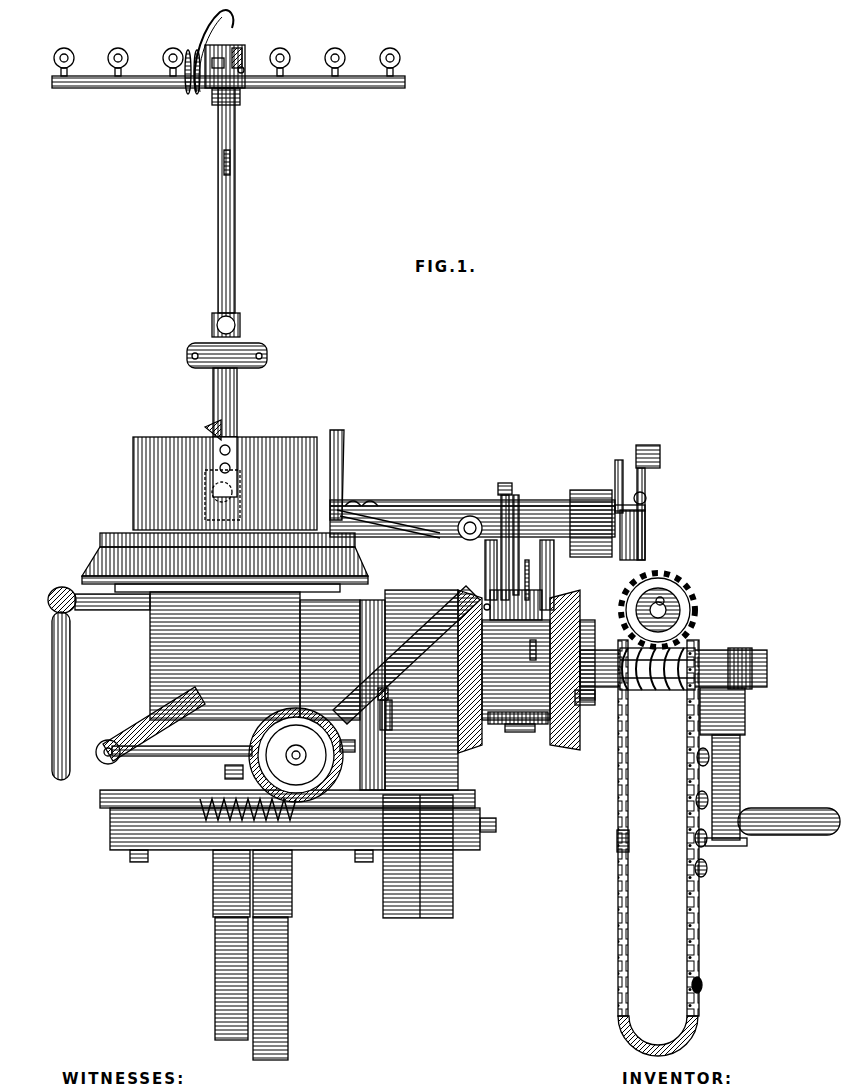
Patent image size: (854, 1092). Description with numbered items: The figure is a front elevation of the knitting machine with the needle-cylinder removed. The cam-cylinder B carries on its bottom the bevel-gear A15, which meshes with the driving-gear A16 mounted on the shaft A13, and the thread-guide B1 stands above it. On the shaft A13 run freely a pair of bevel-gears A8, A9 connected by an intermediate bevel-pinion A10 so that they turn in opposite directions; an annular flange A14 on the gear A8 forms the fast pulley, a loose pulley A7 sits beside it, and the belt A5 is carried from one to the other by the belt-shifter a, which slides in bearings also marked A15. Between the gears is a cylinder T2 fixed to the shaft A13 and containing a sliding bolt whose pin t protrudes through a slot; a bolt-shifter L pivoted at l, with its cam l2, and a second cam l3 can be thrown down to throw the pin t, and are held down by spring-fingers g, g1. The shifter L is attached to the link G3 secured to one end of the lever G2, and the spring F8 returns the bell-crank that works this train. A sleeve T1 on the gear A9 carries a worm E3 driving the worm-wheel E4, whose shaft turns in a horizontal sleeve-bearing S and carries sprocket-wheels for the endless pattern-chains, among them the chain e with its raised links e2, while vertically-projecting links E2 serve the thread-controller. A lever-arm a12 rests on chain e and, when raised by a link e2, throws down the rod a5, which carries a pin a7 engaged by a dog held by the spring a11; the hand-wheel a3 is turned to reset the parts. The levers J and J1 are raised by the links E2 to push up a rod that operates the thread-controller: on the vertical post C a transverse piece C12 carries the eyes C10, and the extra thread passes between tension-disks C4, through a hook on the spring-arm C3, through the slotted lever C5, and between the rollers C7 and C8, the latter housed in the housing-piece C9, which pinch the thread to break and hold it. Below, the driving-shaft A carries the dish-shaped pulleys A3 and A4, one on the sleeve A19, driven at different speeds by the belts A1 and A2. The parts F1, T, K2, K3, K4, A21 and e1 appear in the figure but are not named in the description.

The transverse piece C12 is at (295, 86).
The eyes C10 is at (165, 52).
The lever C5 is at (232, 46).
The roller C7 is at (218, 57).
The housing-piece C9 is at (243, 52).
The roller C8 is at (244, 70).
The tension-disks C4 is at (192, 94).
The spring-arm C3 is at (204, 40).
The vertical post C is at (218, 246).
The lever G2 is at (222, 170).
The thread-guide B1 is at (187, 352).
The cam-cylinder B is at (133, 440).
The valve F1 is at (206, 474).
The bevel-gear A15 is at (104, 540).
The driving-shaft A is at (496, 832).
The belt-shifter a is at (206, 429).
The driving-gear A16 is at (344, 760).
The pin a7 is at (224, 773).
The hand-wheel a3 is at (356, 746).
The loose pulley A7 is at (385, 720).
The lug T is at (381, 694).
The spring a11 is at (380, 600).
The fast pulley A14 is at (458, 756).
The cylinder T2 is at (516, 655).
The bevel-gear A9 is at (560, 724).
The bevel-gear A8 is at (514, 718).
The bevel-pinion A10 is at (522, 732).
The bolt-shifter L is at (485, 575).
The pivot l is at (525, 575).
The cam l2 is at (540, 585).
The pin t is at (485, 606).
The cam l3 is at (531, 645).
The sleeve T1 is at (578, 692).
The lever-arm a12 is at (375, 499).
The spring-finger g is at (468, 516).
The link G3 is at (516, 497).
The spring-finger g1 is at (570, 501).
The cap K2 is at (645, 448).
The bracket arm K3 is at (637, 478).
The bracket arm K4 is at (618, 490).
The spring F8 is at (646, 498).
The vertically-movable rod a5 is at (345, 448).
The horizontal lever J1 is at (352, 502).
The horizontal lever J is at (367, 492).
The shaft A13 is at (752, 666).
The worm E3 is at (660, 690).
The worm-wheel E4 is at (690, 590).
The sleeve-bearing S is at (690, 603).
The pattern-chain e is at (618, 796).
The chain link e1 is at (618, 838).
The raised links e2 is at (709, 988).
The vertically-projecting links E2 is at (696, 758).
The sleeve A19 is at (496, 822).
The bolts A21 is at (148, 862).
The dish-shaped pulley A3 is at (213, 882).
The dish-shaped pulley A4 is at (292, 880).
The belt A1 is at (215, 942).
The belt A2 is at (288, 946).
The belt A5 is at (441, 918).